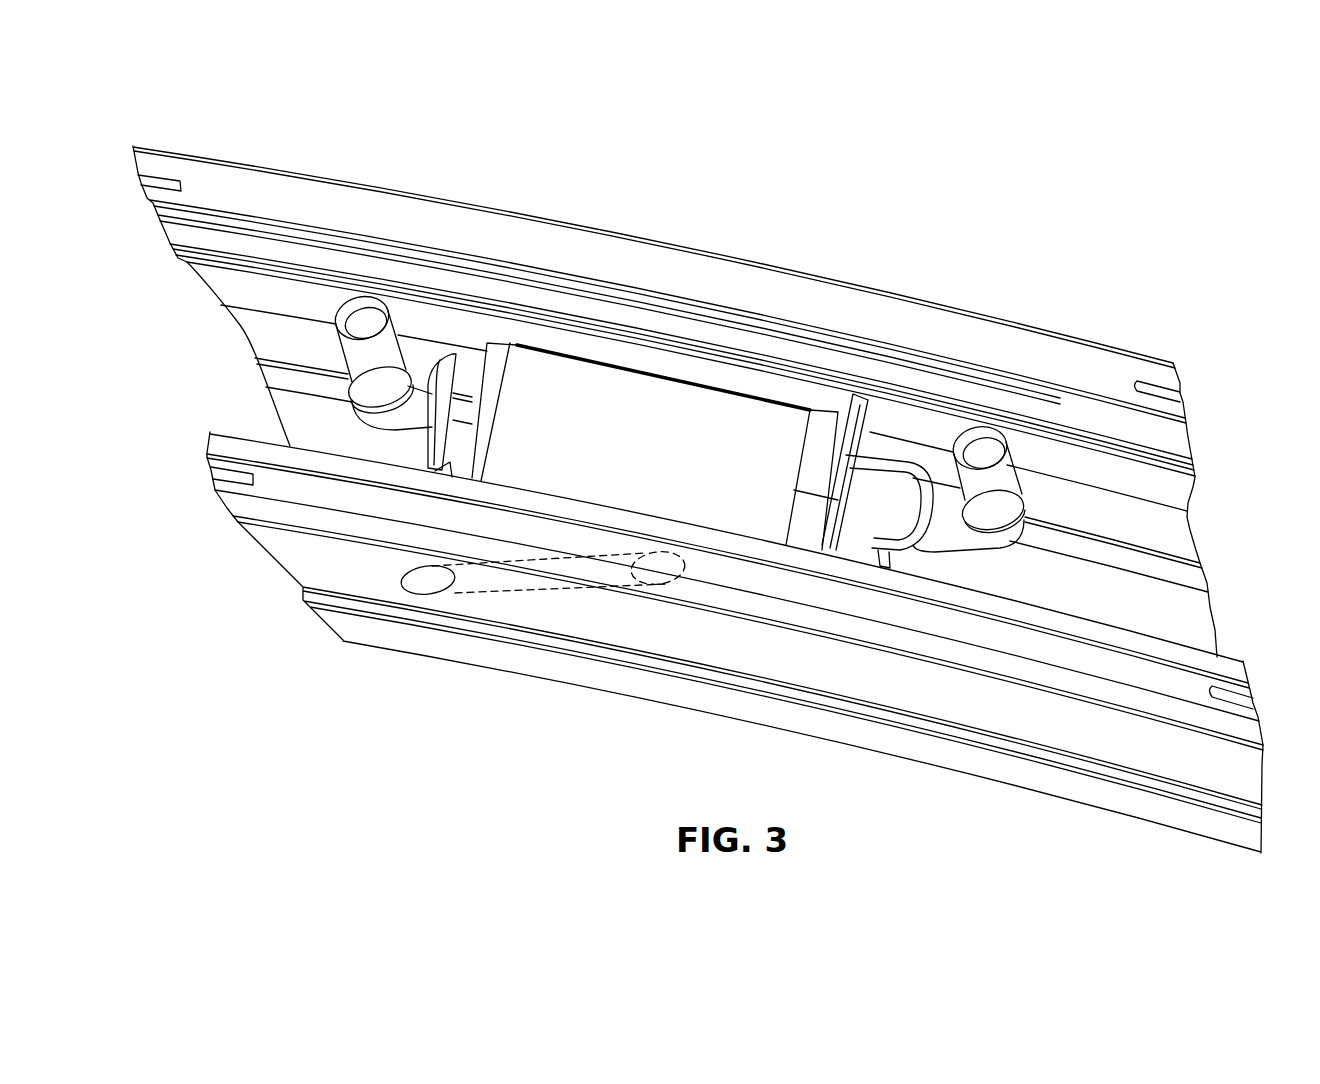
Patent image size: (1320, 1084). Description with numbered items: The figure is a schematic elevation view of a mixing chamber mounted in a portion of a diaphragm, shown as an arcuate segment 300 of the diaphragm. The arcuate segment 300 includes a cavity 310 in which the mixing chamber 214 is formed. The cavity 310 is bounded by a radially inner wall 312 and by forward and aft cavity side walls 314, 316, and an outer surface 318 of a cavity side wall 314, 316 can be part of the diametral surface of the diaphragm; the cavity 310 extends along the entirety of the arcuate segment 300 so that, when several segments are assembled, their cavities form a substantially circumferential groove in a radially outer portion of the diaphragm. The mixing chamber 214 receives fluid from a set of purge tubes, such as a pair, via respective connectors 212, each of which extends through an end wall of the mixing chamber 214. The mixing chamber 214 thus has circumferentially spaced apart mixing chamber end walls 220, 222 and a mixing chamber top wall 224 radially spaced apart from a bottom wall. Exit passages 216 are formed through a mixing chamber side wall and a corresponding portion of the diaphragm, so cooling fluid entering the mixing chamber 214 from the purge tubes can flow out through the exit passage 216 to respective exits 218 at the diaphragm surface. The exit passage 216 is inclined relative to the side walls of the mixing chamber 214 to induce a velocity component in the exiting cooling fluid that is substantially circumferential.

The arcuate segment 300 is at (352, 184).
The cavity 310 is at (1208, 548).
The radially inner wall 312 is at (1177, 617).
The forward cavity side wall 314 is at (1188, 688).
The aft cavity side wall 316 is at (1166, 448).
The outer surface 318 is at (1221, 780).
The connector 212 is at (330, 385).
The mixing chamber 214 is at (655, 367).
The exit passage 216 is at (528, 594).
The exit 218 is at (430, 582).
The mixing chamber end wall 220 is at (478, 341).
The mixing chamber end wall 222 is at (866, 408).
The mixing chamber top wall 224 is at (591, 398).